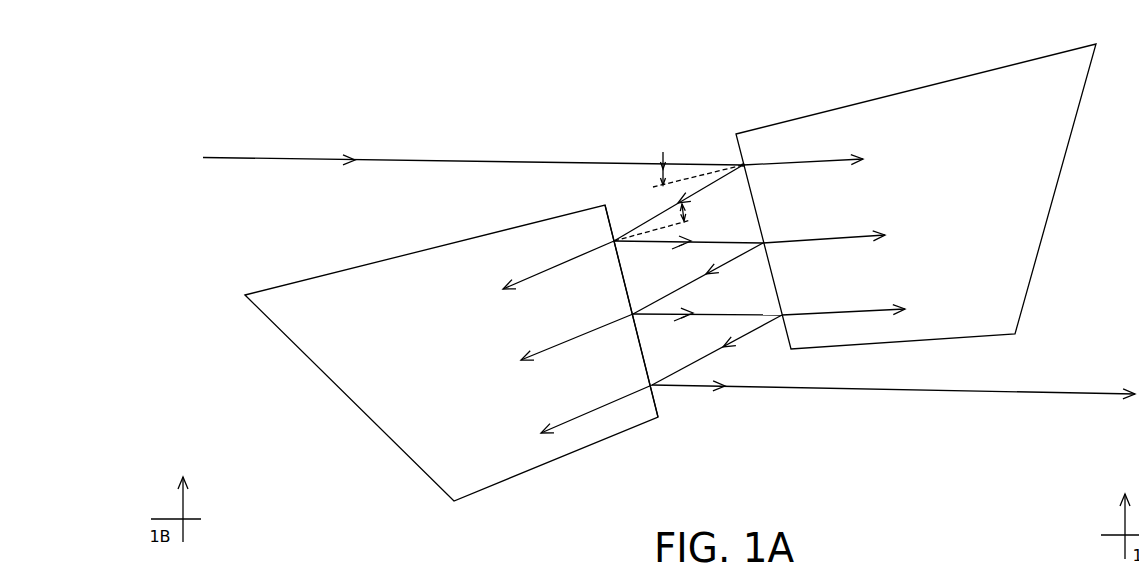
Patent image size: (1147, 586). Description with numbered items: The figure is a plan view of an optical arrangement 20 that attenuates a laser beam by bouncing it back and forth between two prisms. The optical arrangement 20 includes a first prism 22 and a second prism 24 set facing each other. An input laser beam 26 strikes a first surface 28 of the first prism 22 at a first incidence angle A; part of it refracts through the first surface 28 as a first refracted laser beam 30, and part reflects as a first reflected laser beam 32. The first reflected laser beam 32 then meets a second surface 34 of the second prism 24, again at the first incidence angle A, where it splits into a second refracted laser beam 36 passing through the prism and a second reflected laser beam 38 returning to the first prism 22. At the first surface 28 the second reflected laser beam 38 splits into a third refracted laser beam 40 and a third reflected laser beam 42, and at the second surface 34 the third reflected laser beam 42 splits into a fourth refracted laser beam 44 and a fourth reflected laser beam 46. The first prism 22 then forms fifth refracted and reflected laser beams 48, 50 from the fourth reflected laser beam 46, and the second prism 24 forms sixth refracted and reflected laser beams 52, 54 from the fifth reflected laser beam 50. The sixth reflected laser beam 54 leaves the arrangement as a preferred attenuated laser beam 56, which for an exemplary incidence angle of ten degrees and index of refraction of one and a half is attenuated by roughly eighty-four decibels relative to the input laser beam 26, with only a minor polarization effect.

The optical arrangement 20 is at (445, 117).
The first prism 22 is at (986, 159).
The second prism 24 is at (367, 358).
The input laser beam 26 is at (288, 157).
The first surface 28 is at (732, 131).
The first refracted laser beam 30 is at (817, 157).
The first reflected laser beam 32 is at (660, 210).
The second surface 34 is at (657, 406).
The second refracted laser beam 36 is at (538, 267).
The second reflected laser beam 38 is at (707, 237).
The third refracted laser beam 40 is at (838, 233).
The third reflected laser beam 42 is at (678, 284).
The fourth refracted laser beam 44 is at (560, 342).
The fourth reflected laser beam 46 is at (722, 312).
The fifth refracted laser beam 48 is at (855, 308).
The fifth reflected laser beam 50 is at (697, 358).
The sixth refracted laser beam 52 is at (578, 415).
The sixth reflected laser beam 54 is at (740, 384).
The preferred attenuated laser beam 56 is at (1090, 391).
The first incidence angle A is at (711, 195).